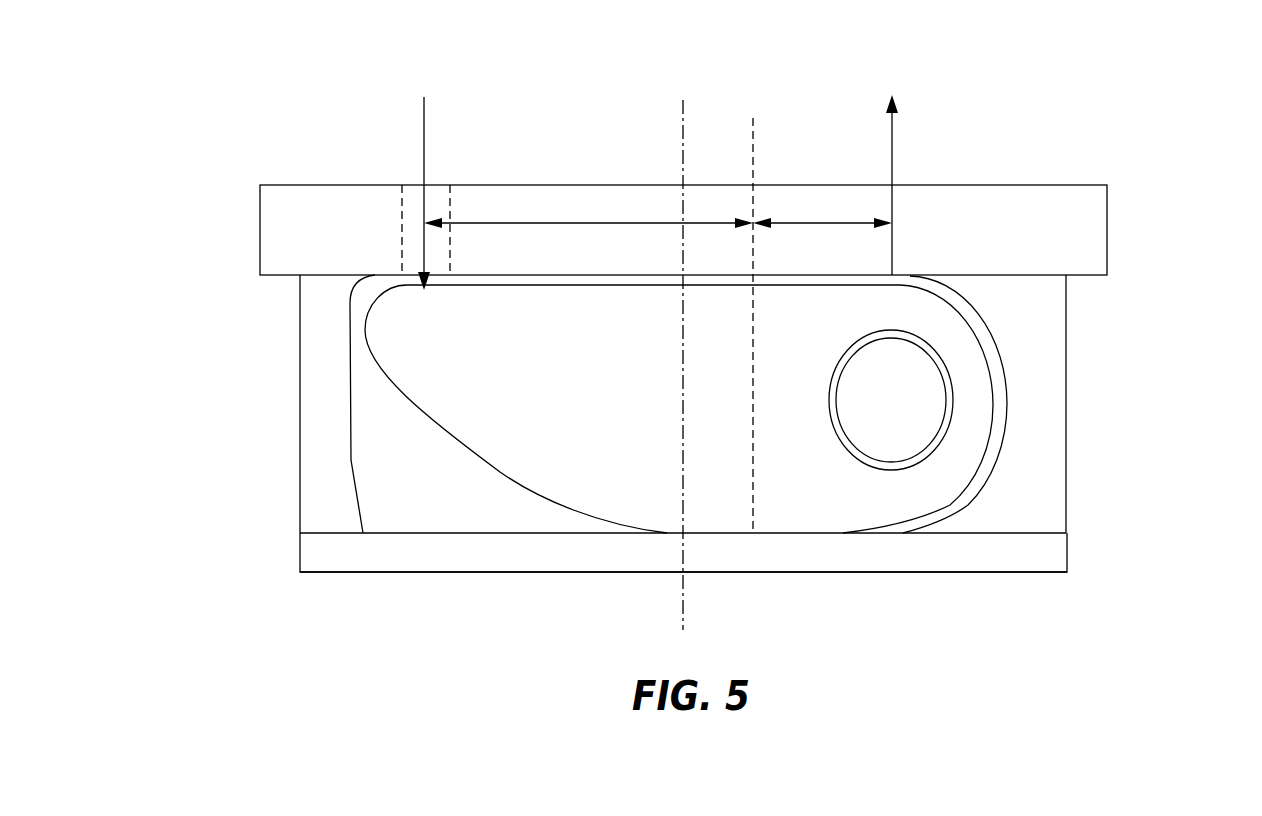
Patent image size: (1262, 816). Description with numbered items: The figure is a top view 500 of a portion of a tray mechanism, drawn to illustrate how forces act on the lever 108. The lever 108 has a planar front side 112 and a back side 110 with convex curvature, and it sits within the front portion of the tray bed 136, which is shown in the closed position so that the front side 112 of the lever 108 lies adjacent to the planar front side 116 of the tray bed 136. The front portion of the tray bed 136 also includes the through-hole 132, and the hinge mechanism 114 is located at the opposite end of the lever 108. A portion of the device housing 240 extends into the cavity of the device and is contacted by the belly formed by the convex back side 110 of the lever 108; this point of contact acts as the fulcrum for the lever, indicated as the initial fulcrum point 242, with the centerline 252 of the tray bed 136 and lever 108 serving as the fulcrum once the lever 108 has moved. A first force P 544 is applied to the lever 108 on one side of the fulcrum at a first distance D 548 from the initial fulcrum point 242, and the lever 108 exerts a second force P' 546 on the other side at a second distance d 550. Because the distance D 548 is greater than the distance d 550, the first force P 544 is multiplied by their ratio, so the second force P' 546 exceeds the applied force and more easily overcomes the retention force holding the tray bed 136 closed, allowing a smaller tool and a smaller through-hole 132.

The top view 500 is at (1178, 80).
The front side of the tray bed 116 is at (260, 230).
The lever 108 is at (498, 403).
The tray bed 136 is at (1047, 447).
The device housing portion 240 is at (522, 552).
The front side of the lever 112 is at (603, 287).
The back side of the lever 110 is at (500, 472).
The hinge mechanism 114 is at (862, 388).
The through-hole 132 is at (413, 225).
The centerline 252 is at (683, 603).
The initial fulcrum point 242 is at (753, 540).
The first force P 544 is at (422, 118).
The second force P' 546 is at (905, 145).
The first distance D 548 is at (588, 185).
The second distance d 550 is at (822, 197).